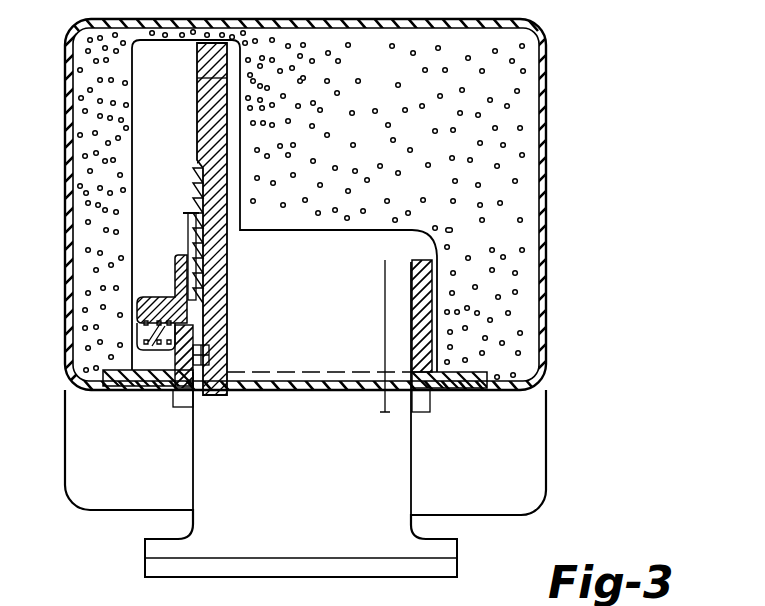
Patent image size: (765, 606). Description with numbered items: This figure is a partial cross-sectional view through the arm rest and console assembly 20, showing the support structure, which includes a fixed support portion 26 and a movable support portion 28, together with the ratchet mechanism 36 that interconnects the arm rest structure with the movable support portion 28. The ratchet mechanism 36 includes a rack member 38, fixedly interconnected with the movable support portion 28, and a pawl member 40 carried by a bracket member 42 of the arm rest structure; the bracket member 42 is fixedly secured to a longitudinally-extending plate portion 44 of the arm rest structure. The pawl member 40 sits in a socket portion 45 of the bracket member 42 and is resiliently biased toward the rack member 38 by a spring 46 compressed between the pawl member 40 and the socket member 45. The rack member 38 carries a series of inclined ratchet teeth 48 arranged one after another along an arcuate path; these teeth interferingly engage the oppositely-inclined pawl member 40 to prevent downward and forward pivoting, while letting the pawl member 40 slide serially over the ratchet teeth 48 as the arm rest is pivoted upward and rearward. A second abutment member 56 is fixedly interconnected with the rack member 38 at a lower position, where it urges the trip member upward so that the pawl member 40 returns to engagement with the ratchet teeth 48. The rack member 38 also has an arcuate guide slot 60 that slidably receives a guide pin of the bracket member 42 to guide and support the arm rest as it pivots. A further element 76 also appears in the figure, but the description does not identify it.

The arm rest and console assembly 20 is at (551, 213).
The fixed support portion 26 is at (457, 573).
The movable support portion 28 is at (411, 481).
The ratchet mechanism 36 is at (168, 274).
The rack member 38 is at (222, 243).
The pawl member 40 is at (200, 314).
The bracket member 42 is at (172, 370).
The longitudinally-extending plate portion 44 is at (462, 376).
The socket portion 45 is at (143, 325).
The spring 46 is at (147, 382).
The ratchet teeth 48 is at (204, 288).
The second abutment member 56 is at (209, 352).
The guide slot 60 is at (197, 74).
The reference element 76 is at (31, 598).